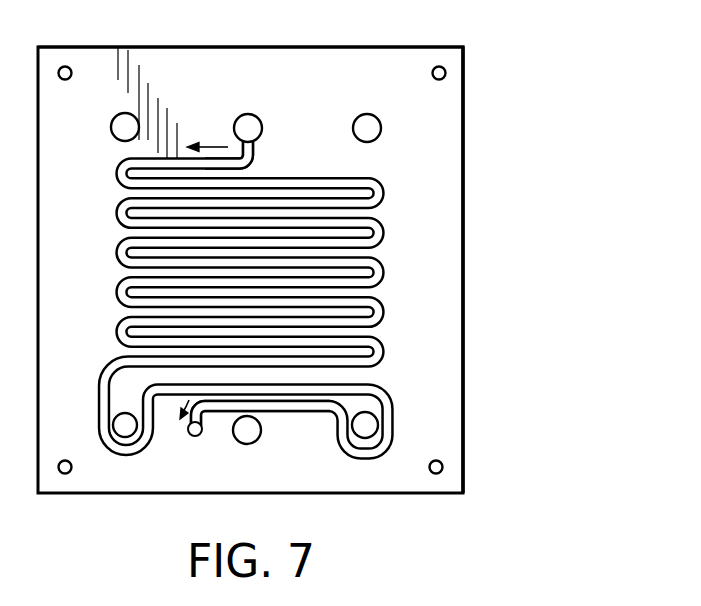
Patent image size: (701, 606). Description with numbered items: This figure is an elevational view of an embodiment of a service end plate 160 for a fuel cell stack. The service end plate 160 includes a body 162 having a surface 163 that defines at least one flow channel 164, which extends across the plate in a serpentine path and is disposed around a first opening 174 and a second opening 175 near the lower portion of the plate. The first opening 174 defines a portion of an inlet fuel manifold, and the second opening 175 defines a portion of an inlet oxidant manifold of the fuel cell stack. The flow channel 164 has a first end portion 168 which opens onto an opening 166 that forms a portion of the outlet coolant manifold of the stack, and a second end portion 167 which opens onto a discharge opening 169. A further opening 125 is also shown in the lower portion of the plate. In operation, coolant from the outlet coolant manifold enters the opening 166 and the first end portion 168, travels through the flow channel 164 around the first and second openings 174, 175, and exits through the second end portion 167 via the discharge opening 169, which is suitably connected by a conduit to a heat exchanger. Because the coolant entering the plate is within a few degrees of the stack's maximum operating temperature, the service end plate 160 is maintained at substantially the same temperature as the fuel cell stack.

The service end plate 160 is at (551, 67).
The body 162 is at (463, 222).
The surface 163 is at (447, 356).
The flow channel 164 is at (297, 177).
The opening 166 is at (249, 122).
The first end portion 168 is at (258, 152).
The second end portion 167 is at (218, 413).
The discharge opening 169 is at (190, 437).
The first opening 174 is at (120, 438).
The second opening 175 is at (357, 438).
The opening 125 is at (262, 437).